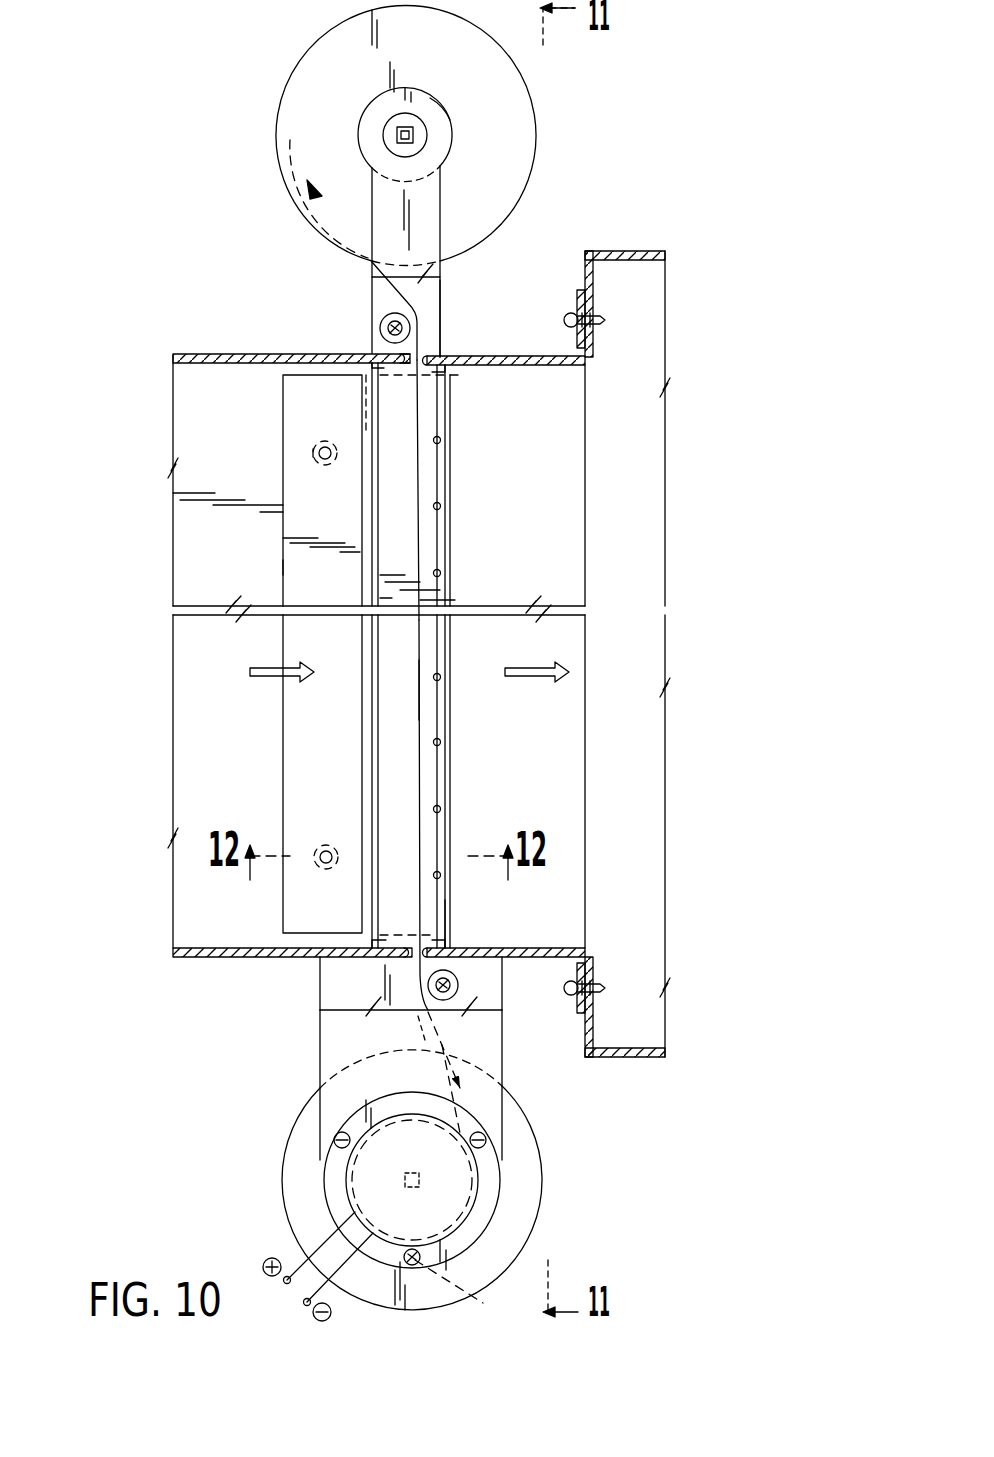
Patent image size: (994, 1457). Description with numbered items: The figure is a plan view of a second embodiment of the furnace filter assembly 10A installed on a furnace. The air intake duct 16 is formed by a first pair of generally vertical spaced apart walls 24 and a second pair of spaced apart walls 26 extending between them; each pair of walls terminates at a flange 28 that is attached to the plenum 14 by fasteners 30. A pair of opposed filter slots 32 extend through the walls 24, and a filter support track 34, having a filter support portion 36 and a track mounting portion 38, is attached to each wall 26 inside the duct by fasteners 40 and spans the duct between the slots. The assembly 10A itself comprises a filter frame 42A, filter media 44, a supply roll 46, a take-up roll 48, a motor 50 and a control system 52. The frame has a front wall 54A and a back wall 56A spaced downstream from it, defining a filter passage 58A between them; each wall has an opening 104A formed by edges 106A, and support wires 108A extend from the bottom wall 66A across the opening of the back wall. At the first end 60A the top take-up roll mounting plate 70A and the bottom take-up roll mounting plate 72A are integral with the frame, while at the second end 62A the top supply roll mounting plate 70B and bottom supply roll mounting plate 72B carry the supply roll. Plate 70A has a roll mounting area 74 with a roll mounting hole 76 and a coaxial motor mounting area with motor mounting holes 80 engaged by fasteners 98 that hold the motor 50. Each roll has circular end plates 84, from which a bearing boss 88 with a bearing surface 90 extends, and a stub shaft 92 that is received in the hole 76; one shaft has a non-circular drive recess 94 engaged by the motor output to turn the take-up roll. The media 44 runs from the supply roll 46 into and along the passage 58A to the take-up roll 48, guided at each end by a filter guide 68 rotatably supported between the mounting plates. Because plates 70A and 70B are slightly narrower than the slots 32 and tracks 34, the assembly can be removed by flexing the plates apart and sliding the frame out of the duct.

The furnace filter assembly 10A is at (133, 1070).
The plenum 14 is at (650, 362).
The air intake duct 16 is at (180, 423).
The first pair of spaced apart walls 24 is at (200, 355).
The second pair of spaced apart walls 26 is at (195, 705).
The flange 28 is at (583, 305).
The fasteners 30 is at (572, 320).
The filter slots 32 is at (370, 365).
The filter support track 34 is at (290, 567).
The filter support portion 36 is at (450, 495).
The track mounting portion 38 is at (300, 518).
The fasteners 40 is at (318, 453).
The filter frame 42A is at (375, 958).
The filter media 44 is at (422, 690).
The supply roll 46 is at (270, 165).
The take-up roll 48 is at (543, 1186).
The motor 50 is at (450, 1205).
The control system 52 is at (255, 1247).
The front wall 54A is at (372, 383).
The back wall 56A is at (445, 930).
The filter passage 58A is at (405, 727).
The first end 60A is at (305, 988).
The second end 62A is at (352, 328).
The bottom wall 66A is at (400, 467).
The filter guide 68 is at (385, 318).
The top take-up roll mounting plate 70A is at (502, 1060).
The top supply roll mounting plate 70B is at (432, 197).
The bottom take-up roll mounting plate 72A is at (495, 978).
The bottom supply roll mounting plate 72B is at (438, 303).
The roll mounting area 74 is at (377, 125).
The roll mounting hole 76 is at (395, 145).
The motor mounting holes 80 is at (467, 1289).
The end plate 84 is at (313, 65).
The bearing boss 88 is at (452, 130).
The bearing surface 90 is at (437, 110).
The stub shaft 92 is at (412, 120).
The drive recess 94 is at (397, 122).
The fasteners 98 is at (342, 1140).
The opening 104A is at (372, 632).
The edges 106A is at (440, 385).
The support wires 108A is at (437, 573).